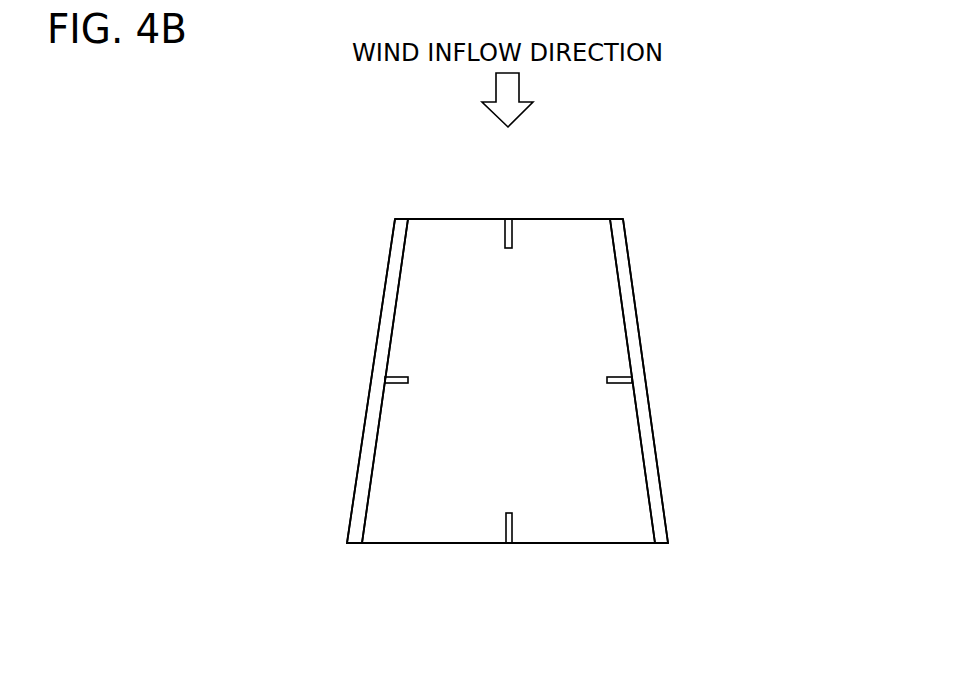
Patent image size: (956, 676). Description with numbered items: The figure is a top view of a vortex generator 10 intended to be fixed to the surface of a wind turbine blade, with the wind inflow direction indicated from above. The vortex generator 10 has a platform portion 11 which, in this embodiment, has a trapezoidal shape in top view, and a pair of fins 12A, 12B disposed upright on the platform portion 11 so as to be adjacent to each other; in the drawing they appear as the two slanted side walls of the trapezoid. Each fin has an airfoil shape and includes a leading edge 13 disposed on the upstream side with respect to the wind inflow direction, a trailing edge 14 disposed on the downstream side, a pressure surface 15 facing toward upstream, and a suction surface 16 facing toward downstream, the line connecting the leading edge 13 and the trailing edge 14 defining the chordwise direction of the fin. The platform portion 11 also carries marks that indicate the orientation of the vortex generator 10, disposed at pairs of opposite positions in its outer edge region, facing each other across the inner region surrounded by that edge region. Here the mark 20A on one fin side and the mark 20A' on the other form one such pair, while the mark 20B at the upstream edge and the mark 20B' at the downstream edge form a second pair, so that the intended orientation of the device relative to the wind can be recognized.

The vortex generator 10 is at (679, 183).
The platform portion 11 is at (557, 247).
The fin 12A is at (392, 287).
The fin 12B is at (623, 290).
The leading edge 13 is at (404, 219).
The trailing edge 14 is at (352, 545).
The pressure surface 15 is at (354, 501).
The suction surface 16 is at (368, 500).
The mark 20A is at (340, 360).
The mark 20A' is at (679, 403).
The mark 20B is at (482, 203).
The mark 20B' is at (488, 571).